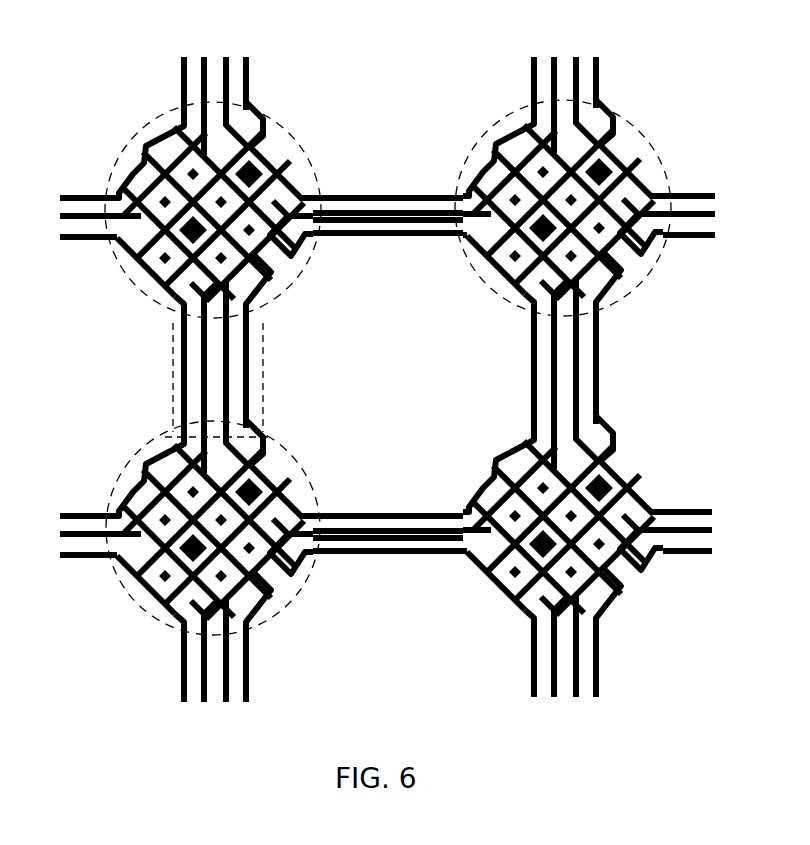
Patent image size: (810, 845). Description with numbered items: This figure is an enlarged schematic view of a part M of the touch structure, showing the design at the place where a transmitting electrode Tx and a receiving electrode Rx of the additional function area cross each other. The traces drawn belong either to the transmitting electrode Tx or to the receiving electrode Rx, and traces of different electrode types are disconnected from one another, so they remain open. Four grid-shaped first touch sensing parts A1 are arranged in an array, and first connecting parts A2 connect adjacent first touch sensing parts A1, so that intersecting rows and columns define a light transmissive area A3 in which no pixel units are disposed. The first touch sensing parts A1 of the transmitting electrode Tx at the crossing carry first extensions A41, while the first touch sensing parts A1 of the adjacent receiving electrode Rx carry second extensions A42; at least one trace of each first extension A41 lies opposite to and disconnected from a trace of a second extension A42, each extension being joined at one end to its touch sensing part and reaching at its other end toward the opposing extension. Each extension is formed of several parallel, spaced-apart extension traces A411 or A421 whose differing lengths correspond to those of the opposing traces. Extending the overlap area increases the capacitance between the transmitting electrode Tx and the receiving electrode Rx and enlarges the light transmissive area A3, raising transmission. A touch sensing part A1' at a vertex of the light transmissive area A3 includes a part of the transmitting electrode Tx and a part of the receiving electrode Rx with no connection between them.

The mesh module M is at (56, 31).
The touch sensing part A1' is at (190, 187).
The first touch sensing part A1 is at (377, 379).
The first connecting part A2 is at (390, 192).
The light transmissive area A3 is at (388, 155).
The second extension A42 is at (181, 316).
The extension trace A421 is at (202, 354).
The first extension A41 is at (264, 330).
The extension trace A411 is at (264, 382).
The transmitting electrode Tx is at (622, 310).
The receiving electrode Rx is at (133, 612).